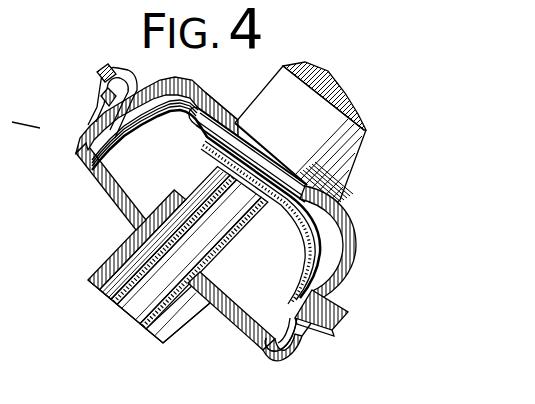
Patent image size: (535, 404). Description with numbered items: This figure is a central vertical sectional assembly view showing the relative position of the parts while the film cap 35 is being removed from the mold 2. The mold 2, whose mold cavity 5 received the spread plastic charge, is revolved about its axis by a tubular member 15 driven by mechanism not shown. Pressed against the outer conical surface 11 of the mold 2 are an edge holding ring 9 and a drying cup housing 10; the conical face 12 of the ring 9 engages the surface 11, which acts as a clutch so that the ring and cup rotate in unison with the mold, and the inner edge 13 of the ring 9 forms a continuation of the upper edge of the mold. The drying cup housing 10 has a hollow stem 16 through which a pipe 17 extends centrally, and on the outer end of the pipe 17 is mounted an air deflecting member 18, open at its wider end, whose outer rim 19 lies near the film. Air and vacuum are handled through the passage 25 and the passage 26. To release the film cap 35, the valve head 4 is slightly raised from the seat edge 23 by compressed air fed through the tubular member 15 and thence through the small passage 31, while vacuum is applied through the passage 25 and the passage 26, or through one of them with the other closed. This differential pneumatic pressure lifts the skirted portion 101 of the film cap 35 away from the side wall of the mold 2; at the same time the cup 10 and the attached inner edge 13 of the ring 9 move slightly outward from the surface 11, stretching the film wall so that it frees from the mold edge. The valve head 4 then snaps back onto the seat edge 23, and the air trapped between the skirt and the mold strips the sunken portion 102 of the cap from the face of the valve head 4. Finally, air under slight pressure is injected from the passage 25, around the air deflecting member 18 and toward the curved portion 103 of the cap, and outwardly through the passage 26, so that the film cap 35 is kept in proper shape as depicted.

The mold 2 is at (355, 240).
The valve head 4 is at (218, 110).
The mold cavity 5 is at (20, 123).
The edge holding ring 9 is at (334, 306).
The drying cup housing 10 is at (213, 317).
The outer conical surface 11 is at (132, 102).
The conical face 12 is at (308, 300).
The inner edge 13 is at (90, 120).
The tubular member 15 is at (338, 93).
The hollow stem 16 is at (110, 258).
The pipe 17 is at (113, 302).
The air deflecting member 18 is at (258, 348).
The outer rim 19 is at (82, 164).
The seat edge 23 is at (340, 200).
The passage 25 is at (151, 334).
The passage 26 is at (133, 312).
The small passage 31 is at (268, 74).
The film cap 35 is at (202, 182).
The skirted portion 101 is at (108, 153).
The sunken portion 102 is at (185, 163).
The curved portion 103 is at (175, 96).